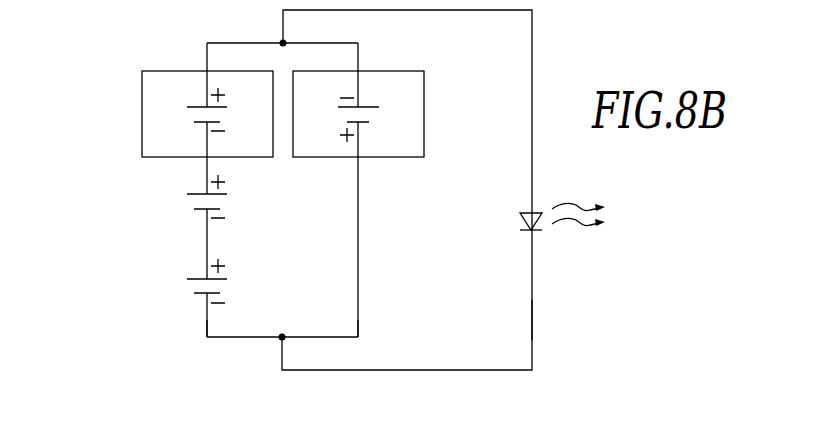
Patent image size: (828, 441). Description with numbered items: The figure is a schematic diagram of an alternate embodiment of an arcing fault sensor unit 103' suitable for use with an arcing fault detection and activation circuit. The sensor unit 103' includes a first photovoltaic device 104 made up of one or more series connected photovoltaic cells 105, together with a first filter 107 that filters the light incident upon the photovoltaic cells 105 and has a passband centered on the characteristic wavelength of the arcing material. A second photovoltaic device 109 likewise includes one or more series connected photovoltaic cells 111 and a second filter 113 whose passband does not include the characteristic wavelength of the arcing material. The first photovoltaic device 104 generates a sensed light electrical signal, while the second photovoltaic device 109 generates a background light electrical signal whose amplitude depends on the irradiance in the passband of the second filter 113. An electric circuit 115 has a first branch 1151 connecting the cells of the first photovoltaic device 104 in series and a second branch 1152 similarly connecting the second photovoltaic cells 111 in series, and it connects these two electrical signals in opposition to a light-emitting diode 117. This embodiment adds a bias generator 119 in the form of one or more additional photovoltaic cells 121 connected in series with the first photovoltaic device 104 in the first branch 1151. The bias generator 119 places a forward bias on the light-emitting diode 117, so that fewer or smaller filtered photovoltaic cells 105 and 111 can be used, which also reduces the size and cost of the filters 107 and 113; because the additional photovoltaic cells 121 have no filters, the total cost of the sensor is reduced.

The sensor unit 103' is at (339, 190).
The first photovoltaic device 104 is at (171, 99).
The photovoltaic cells 105 is at (188, 106).
The first filter 107 is at (142, 136).
The second photovoltaic device 109 is at (395, 99).
The photovoltaic cells 111 is at (366, 107).
The second filter 113 is at (424, 136).
The electric circuit 115 is at (553, 315).
The first branch 1151 is at (207, 328).
The second branch 1152 is at (358, 328).
The light-emitting diode 117 is at (522, 232).
The bias generator 119 is at (136, 255).
The additional photovoltaic cells 121 is at (187, 196).